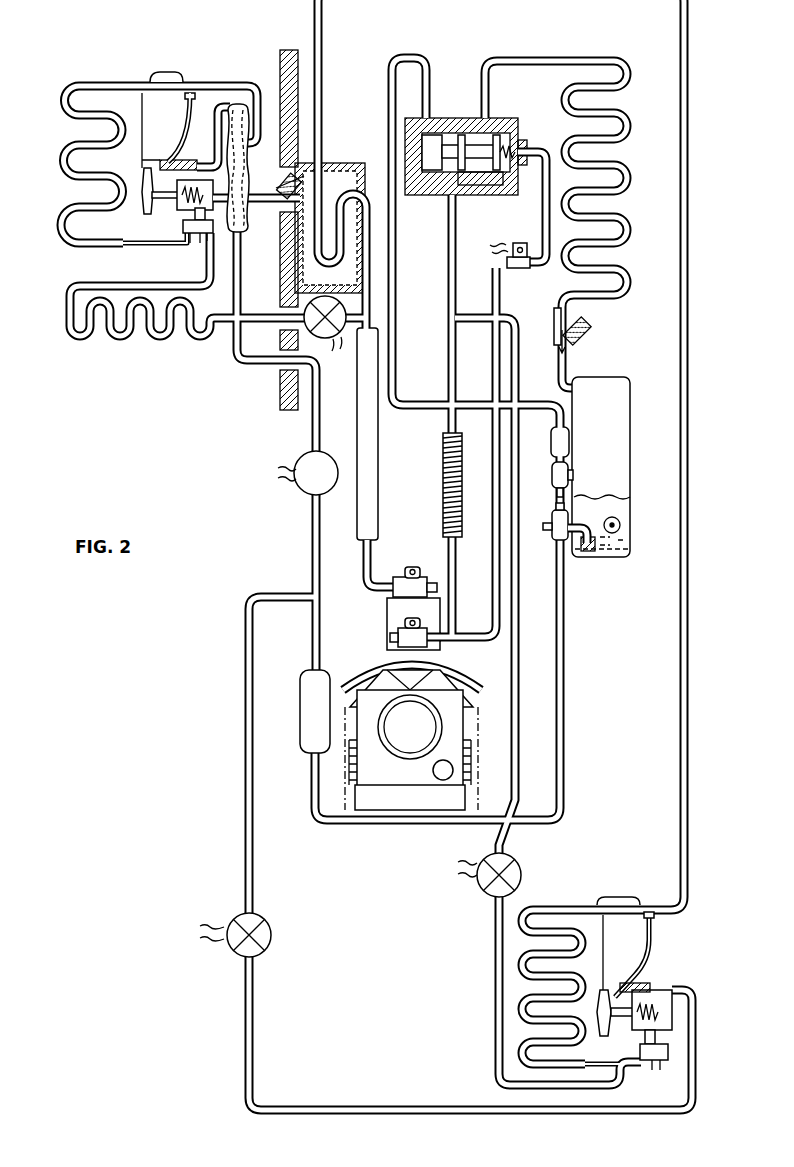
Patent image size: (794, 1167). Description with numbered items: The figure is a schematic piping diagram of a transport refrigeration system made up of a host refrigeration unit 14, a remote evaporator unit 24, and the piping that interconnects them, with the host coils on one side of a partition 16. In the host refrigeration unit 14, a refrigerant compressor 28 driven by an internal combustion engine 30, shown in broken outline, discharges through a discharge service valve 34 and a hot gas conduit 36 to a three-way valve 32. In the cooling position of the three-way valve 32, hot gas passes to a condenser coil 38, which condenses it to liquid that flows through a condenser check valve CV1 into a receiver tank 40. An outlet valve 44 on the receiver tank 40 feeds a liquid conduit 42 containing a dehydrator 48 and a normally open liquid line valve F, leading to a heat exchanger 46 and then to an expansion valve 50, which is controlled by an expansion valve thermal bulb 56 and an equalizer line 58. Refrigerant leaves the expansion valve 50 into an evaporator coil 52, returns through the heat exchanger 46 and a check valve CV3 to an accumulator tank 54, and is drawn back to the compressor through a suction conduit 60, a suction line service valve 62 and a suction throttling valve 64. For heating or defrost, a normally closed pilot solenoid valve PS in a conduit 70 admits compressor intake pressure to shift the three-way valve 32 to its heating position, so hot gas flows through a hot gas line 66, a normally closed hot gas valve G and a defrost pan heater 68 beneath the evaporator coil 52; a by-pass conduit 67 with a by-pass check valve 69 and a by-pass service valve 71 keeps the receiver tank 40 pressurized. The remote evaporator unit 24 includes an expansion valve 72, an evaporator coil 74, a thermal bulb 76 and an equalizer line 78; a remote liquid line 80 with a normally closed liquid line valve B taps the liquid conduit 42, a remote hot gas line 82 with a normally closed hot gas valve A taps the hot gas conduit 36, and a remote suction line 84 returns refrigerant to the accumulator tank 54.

The host refrigeration unit 14 is at (246, 32).
The conduit through wall 16 is at (283, 387).
The remote evaporator unit 24 is at (699, 964).
The refrigerant compressor 28 is at (468, 738).
The internal combustion engine 30 is at (345, 760).
The three-way valve 32 is at (507, 118).
The discharge service valve 34 is at (392, 630).
The hot gas conduit 36 is at (447, 302).
The condenser coil 38 is at (632, 138).
The receiver tank 40 is at (600, 557).
The liquid conduit 42 is at (567, 745).
The outlet valve 44 is at (553, 538).
The heat exchanger 46 is at (244, 238).
The dehydrator 48 is at (299, 680).
The expansion valve 50 is at (168, 225).
The evaporator coil 52 is at (66, 175).
The accumulator tank 54 is at (335, 163).
The expansion valve thermal bulb 56 is at (165, 72).
The equalizer line 58 is at (190, 140).
The suction conduit 60 is at (360, 550).
The suction line service valve 62 is at (410, 572).
The suction throttling valve 64 is at (388, 608).
The hot gas line 66 is at (385, 62).
The by-pass conduit 67 is at (415, 410).
The defrost pan heater 68 is at (160, 340).
The by-pass check valve 69 is at (551, 440).
The conduit 70 is at (498, 300).
The by-pass service valve 71 is at (552, 477).
The expansion valve 72 is at (639, 1053).
The evaporator coil 74 is at (523, 902).
The thermal bulb 76 is at (614, 896).
The equalizer line 78 is at (640, 952).
The remote liquid line 80 is at (244, 835).
The remote hot gas line 82 is at (492, 950).
The remote suction line 84 is at (688, 565).
The hot gas valve A is at (480, 893).
The liquid line valve B is at (266, 922).
The liquid line valve F is at (308, 473).
The hot gas valve G is at (310, 333).
The pilot solenoid valve PS is at (514, 242).
The condenser check valve CV1 is at (583, 325).
The check valve CV3 is at (298, 180).